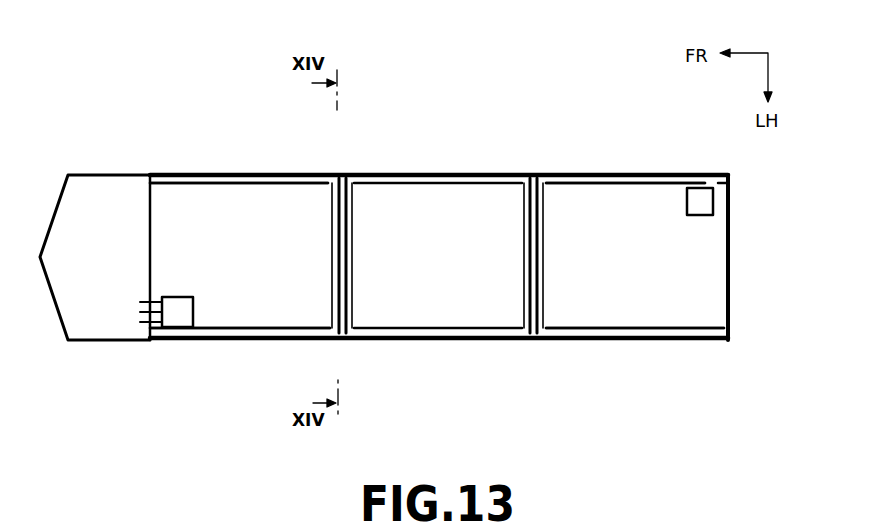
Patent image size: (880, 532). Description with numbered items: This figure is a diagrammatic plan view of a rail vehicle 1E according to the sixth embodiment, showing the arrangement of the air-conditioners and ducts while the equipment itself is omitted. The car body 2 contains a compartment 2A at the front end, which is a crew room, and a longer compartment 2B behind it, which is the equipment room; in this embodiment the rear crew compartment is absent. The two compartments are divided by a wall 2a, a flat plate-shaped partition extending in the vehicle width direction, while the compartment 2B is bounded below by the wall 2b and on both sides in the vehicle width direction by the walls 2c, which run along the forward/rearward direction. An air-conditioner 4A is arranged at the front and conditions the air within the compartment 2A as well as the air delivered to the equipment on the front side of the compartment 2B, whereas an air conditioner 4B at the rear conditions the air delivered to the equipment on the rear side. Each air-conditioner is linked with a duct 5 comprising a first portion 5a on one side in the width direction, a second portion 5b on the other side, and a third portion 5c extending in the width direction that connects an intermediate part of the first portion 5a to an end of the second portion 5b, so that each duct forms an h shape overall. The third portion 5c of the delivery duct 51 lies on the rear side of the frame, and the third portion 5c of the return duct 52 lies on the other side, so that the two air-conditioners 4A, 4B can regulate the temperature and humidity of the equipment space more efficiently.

The rail vehicle 1E is at (632, 48).
The car body 2 is at (402, 242).
The compartment 2A is at (103, 190).
The wall 2a is at (150, 194).
The compartment 2B is at (646, 190).
The wall 2b is at (665, 320).
The wall 2c is at (423, 175).
The air-conditioner 4A is at (172, 312).
The air conditioner 4B is at (690, 186).
The duct 5 is at (437, 242).
The first portion 5a is at (577, 176).
The second portion 5b is at (205, 175).
The third portion 5c is at (452, 242).
The delivery duct 51 is at (503, 226).
The return duct 52 is at (437, 242).